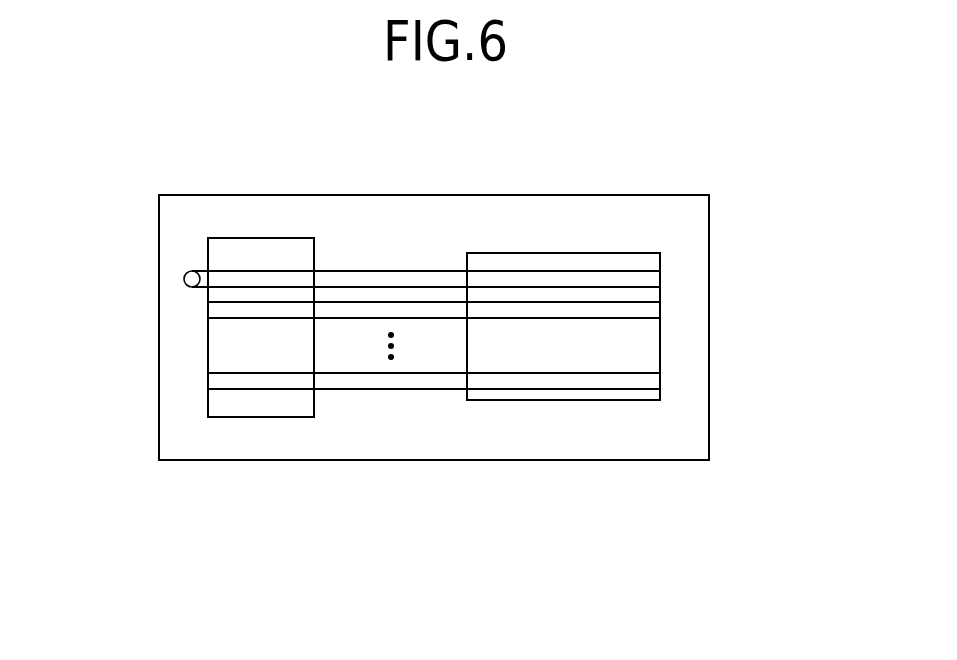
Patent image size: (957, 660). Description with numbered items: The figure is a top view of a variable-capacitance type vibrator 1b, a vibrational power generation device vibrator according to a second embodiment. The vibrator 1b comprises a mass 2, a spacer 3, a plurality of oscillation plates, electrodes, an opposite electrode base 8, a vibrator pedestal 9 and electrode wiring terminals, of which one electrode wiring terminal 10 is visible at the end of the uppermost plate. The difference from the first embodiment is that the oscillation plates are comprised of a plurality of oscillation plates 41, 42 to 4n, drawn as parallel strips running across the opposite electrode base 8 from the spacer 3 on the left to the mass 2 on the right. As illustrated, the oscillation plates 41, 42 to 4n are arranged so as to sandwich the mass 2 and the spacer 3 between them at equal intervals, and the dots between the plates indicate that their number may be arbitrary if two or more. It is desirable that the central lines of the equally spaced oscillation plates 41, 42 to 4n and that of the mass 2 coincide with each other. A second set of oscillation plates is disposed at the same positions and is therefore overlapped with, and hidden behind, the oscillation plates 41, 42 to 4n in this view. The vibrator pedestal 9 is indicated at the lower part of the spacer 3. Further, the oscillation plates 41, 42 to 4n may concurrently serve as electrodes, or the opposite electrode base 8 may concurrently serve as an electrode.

The variable-capacitance type vibrator 1b is at (698, 178).
The opposite electrode base 8 is at (643, 220).
The mass 2 is at (567, 265).
The spacer 3 is at (220, 349).
The vibrator pedestal 9 is at (220, 406).
The electrode wiring terminal 10 is at (184, 278).
The oscillation plate 41 is at (643, 280).
The oscillation plate 42 is at (643, 311).
The oscillation plate 4n is at (643, 382).